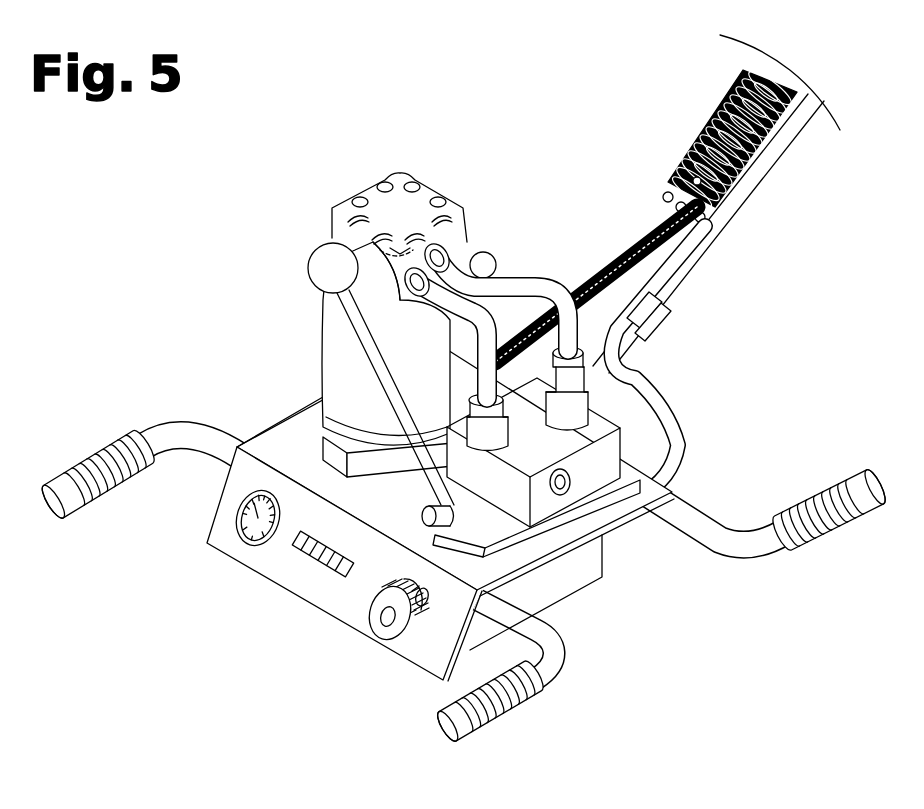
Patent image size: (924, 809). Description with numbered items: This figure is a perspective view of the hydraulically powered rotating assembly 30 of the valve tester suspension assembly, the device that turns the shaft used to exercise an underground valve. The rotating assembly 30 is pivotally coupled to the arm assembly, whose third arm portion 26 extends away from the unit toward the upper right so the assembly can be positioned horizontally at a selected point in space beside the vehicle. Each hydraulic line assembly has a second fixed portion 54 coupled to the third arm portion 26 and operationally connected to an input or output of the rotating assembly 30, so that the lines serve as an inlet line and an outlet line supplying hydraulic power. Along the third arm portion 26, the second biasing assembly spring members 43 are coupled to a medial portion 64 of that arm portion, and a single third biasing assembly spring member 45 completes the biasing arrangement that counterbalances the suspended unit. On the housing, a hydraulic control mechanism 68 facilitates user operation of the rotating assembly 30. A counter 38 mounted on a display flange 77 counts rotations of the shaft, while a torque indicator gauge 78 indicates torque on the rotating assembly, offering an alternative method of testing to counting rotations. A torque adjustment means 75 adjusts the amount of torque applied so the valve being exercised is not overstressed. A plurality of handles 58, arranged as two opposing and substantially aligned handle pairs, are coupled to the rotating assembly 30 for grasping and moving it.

The third arm portion 26 is at (668, 245).
The rotating assembly 30 is at (340, 377).
The counter 38 is at (315, 555).
The second biasing assembly spring member 43 is at (720, 104).
The third biasing assembly spring member 45 is at (590, 273).
The second fixed portion 54 is at (640, 333).
The handles 58 is at (482, 258).
The medial portion 64 is at (728, 240).
The hydraulic control mechanism 68 is at (337, 257).
The torque adjustment means 75 is at (560, 583).
The display flange 77 is at (353, 610).
The torque indicator gauge 78 is at (253, 512).